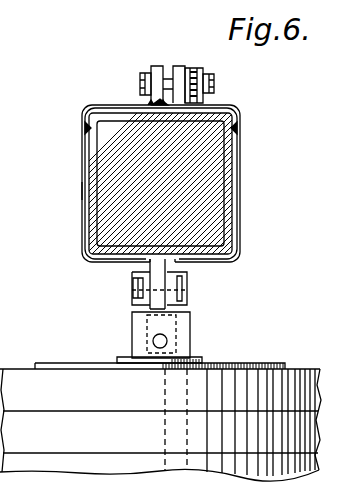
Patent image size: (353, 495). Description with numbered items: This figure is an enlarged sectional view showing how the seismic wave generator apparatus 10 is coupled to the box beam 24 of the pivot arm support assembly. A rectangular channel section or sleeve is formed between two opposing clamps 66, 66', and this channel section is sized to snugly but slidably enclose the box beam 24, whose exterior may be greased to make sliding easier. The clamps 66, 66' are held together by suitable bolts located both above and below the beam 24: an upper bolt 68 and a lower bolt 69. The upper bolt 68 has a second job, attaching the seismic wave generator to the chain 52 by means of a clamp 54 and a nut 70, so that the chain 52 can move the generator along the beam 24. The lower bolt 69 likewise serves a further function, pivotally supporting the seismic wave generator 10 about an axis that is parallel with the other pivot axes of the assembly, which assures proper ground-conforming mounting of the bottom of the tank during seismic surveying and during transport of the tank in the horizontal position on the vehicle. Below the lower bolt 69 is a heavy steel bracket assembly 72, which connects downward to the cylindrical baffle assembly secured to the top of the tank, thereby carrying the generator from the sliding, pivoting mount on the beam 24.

The seismic wave generator apparatus 10 is at (254, 349).
The box beam 24 is at (98, 173).
The chain 52 is at (188, 68).
The clamp 54 is at (198, 70).
The clamp 66 is at (187, 180).
The clamp 66' is at (56, 204).
The upper bolt 68 is at (140, 74).
The lower bolt 69 is at (133, 285).
The nut 70 is at (217, 88).
The heavy steel bracket assembly 72 is at (209, 324).